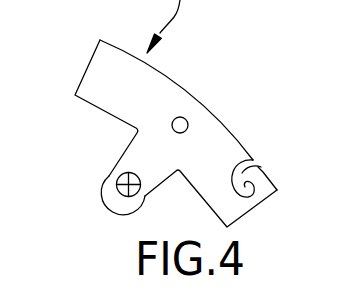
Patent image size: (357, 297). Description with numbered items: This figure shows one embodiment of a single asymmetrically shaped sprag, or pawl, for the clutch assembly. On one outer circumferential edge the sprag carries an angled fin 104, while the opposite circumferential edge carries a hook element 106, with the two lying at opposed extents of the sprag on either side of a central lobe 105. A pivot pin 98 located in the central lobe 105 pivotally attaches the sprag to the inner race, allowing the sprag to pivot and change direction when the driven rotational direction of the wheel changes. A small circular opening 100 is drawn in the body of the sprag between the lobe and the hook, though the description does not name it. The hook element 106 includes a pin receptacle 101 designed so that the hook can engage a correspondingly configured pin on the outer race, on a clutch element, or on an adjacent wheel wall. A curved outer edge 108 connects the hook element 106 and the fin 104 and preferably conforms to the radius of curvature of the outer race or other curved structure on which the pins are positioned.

The pivot pin 98 is at (118, 180).
The aperture 100 is at (180, 125).
The pin receptacle 101 is at (264, 164).
The angled fin 104 is at (88, 65).
The central lobe 105 is at (130, 211).
The hook element 106 is at (277, 191).
The curved outer edge 108 is at (227, 129).